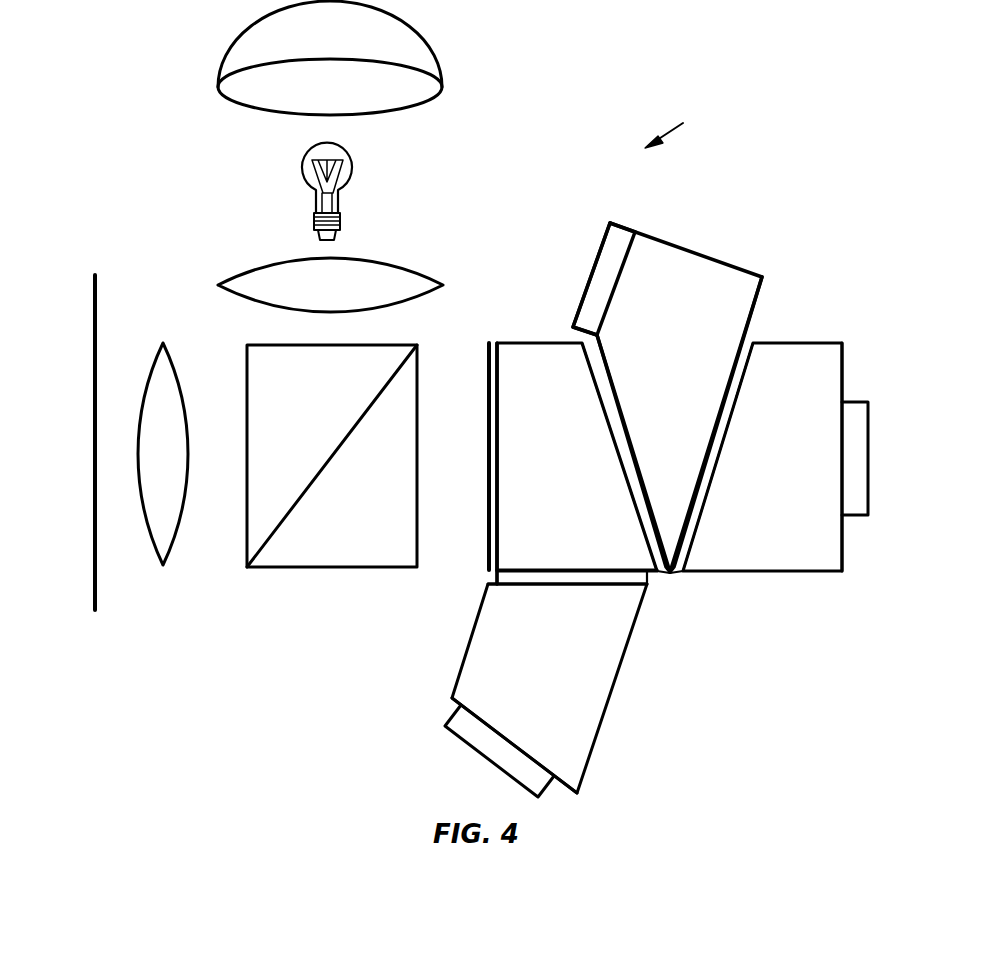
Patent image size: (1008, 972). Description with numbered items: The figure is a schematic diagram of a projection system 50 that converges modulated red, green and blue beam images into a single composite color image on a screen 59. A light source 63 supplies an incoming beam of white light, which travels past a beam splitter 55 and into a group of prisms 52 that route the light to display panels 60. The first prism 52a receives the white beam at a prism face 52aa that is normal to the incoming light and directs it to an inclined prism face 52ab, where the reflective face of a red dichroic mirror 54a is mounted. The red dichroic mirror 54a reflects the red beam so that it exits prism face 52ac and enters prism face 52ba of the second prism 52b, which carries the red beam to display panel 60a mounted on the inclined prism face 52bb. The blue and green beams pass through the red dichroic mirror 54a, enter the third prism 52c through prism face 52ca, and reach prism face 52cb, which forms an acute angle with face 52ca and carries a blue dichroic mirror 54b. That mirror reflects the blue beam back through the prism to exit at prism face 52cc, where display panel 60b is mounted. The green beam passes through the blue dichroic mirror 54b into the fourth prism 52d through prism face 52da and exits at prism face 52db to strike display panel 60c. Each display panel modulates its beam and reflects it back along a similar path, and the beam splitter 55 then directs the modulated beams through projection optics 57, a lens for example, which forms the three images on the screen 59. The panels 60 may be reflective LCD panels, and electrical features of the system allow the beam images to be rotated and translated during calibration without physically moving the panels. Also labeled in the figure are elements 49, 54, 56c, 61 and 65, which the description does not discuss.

The plate 49 is at (487, 455).
The projection system 50 is at (684, 129).
The prisms 52 is at (530, 342).
The prism 52a is at (562, 342).
The prism face 52aa is at (497, 483).
The prism face 52ab is at (631, 495).
The prism face 52ac is at (504, 570).
The prism 52b is at (608, 703).
The prism face 52ba is at (575, 586).
The prism face 52bb is at (503, 737).
The prism 52c is at (647, 236).
The prism face 52ca is at (617, 400).
The prism face 52cb is at (736, 366).
The prism face 52cc is at (618, 290).
The prism 52d is at (842, 545).
The prism face 52da is at (726, 430).
The prism face 52db is at (842, 478).
The hinge 54 is at (605, 372).
The red dichroic mirror 54a is at (590, 350).
The blue dichroic mirror 54b is at (749, 357).
The beam splitter 55 is at (325, 570).
The connecting strip 56c is at (500, 577).
The projection optics 57 is at (162, 345).
The screen 59 is at (93, 425).
The display panels 60 is at (590, 275).
The display panel 60a is at (490, 762).
The display panel 60b is at (598, 242).
The display panel 60c is at (868, 490).
The condenser lens 61 is at (220, 287).
The light source 63 is at (300, 173).
The reflector 65 is at (238, 47).